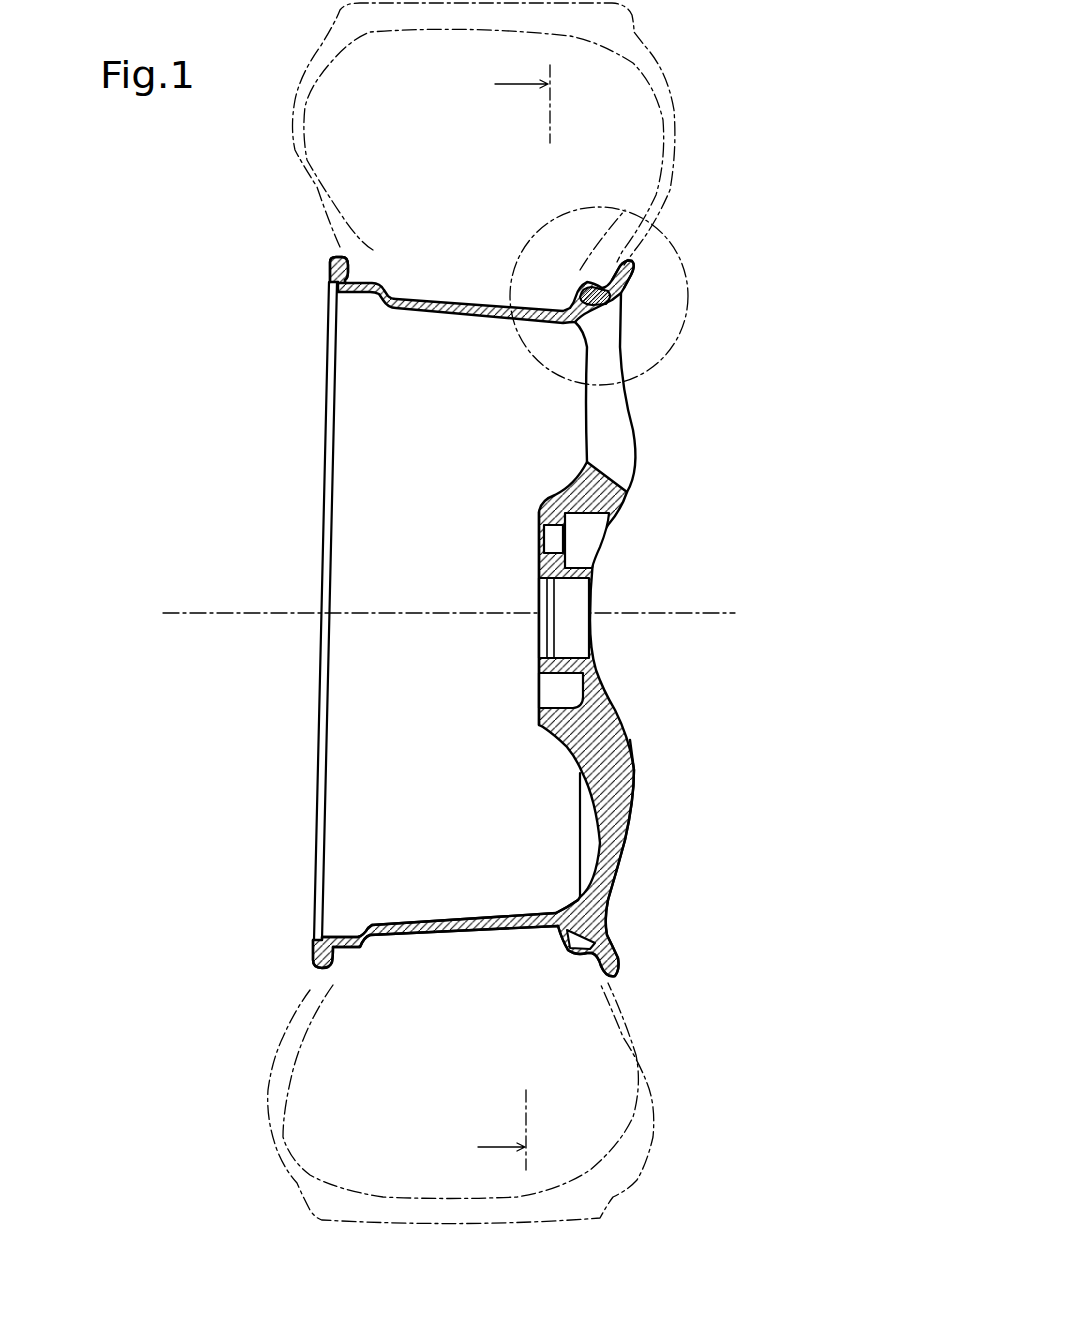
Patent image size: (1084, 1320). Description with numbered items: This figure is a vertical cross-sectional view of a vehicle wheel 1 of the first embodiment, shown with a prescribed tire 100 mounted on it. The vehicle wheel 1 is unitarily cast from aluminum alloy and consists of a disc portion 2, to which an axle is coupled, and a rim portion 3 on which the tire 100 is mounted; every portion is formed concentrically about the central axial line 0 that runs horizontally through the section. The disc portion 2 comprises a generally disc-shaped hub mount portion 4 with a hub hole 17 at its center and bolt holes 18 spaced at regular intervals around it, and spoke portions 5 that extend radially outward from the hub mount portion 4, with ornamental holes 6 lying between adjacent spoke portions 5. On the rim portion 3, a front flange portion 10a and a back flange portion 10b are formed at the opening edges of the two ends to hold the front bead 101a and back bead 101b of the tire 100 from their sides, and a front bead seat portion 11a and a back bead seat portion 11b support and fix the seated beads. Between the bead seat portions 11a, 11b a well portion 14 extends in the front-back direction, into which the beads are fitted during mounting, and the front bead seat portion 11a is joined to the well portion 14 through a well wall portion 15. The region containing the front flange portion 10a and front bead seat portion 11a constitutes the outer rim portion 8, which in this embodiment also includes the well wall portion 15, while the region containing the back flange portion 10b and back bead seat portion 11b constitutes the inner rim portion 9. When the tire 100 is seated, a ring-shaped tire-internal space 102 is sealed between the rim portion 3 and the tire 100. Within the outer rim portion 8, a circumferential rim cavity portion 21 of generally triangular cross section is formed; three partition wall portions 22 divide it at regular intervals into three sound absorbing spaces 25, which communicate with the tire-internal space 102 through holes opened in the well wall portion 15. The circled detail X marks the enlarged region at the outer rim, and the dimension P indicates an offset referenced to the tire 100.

The vehicle wheel 1 is at (698, 417).
The disc portion 2 is at (628, 487).
The rim portion 3 is at (435, 298).
The hub mount portion 4 is at (596, 683).
The spoke portions 5 is at (630, 797).
The ornamental holes 6 is at (617, 420).
The outer rim portion 8 is at (577, 287).
The inner rim portion 9 is at (333, 283).
The central axial line 0 is at (217, 613).
The hub hole 17 is at (548, 597).
The bolt holes 18 is at (553, 538).
The partition wall portions 22 is at (607, 296).
The well portion 14 is at (510, 917).
The well wall portion 15 is at (557, 938).
The rim cavity portion 21 is at (560, 913).
The sound absorbing spaces 25 is at (612, 946).
The front flange portion 10a is at (617, 975).
The back flange portion 10b is at (313, 958).
The front bead seat portion 11a is at (565, 955).
The back bead seat portion 11b is at (337, 935).
The tire 100 is at (310, 65).
The tire-internal space 102 is at (617, 118).
The front bead 101a is at (583, 1000).
The back bead 101b is at (345, 975).
The enlarged portion X is at (667, 237).
The offset dimension P is at (500, 616).